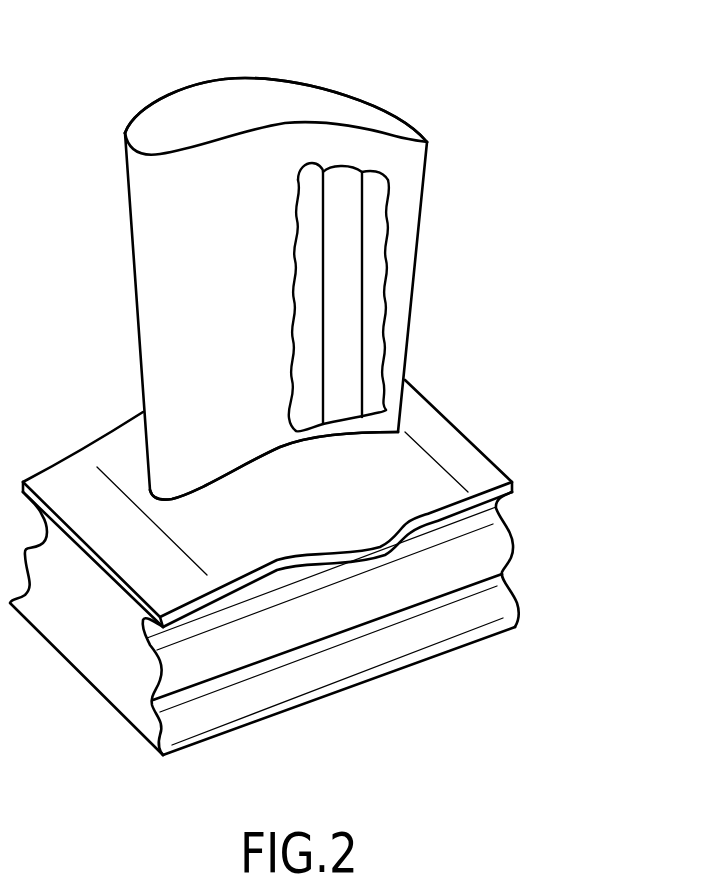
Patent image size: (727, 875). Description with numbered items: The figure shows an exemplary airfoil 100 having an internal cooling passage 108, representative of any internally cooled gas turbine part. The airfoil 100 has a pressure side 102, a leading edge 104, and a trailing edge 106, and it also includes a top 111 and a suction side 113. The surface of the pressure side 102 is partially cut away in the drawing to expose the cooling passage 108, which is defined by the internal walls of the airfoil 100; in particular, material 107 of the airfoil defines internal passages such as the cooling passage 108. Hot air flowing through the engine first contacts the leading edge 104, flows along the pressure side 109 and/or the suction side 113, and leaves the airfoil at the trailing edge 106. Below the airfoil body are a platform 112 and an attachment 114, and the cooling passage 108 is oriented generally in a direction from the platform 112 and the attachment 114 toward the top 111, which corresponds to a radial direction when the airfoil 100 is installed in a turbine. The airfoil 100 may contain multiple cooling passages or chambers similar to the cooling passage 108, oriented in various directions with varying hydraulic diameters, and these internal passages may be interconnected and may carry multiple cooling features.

The airfoil 100 is at (473, 100).
The pressure side 102 is at (185, 222).
The leading edge 104 is at (132, 272).
The trailing edge 106 is at (418, 252).
The material 107 is at (378, 338).
The cooling passage 108 is at (347, 207).
The pressure side 109 is at (263, 170).
The top 111 is at (207, 98).
The platform 112 is at (458, 468).
The suction side 113 is at (265, 80).
The attachment 114 is at (492, 600).